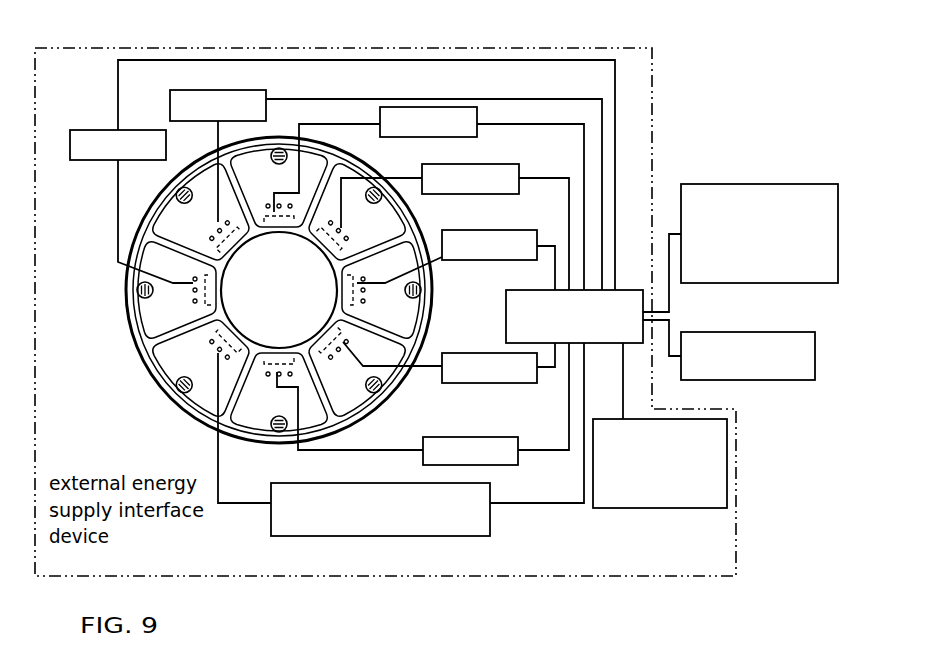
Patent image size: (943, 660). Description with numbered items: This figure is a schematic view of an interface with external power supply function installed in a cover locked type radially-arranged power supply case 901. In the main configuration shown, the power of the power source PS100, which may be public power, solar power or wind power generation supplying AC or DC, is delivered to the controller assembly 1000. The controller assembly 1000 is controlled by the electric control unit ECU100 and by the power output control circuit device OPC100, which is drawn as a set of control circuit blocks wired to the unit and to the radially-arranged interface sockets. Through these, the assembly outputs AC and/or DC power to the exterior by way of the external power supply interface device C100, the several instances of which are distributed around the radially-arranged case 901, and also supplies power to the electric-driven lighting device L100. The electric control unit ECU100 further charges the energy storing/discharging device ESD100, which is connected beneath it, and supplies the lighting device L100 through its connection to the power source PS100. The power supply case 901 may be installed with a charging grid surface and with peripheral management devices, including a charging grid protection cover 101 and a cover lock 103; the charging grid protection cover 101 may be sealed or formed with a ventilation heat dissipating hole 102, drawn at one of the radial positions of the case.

The controller assembly 1000 is at (410, 48).
The charging grid protection cover 101 is at (158, 203).
The ventilation heat dissipating hole 102 is at (193, 302).
The cover lock 103 is at (182, 398).
The cover locked type radially-arranged power supply case 901 is at (130, 350).
The external power supply interface device C100 is at (263, 217).
The power output control circuit device OPC100 is at (91, 129).
The electric control unit ECU100 is at (632, 288).
The electric-driven lighting device L100 is at (740, 283).
The power source PS100 is at (748, 380).
The energy storing/discharging device ESD100 is at (618, 508).